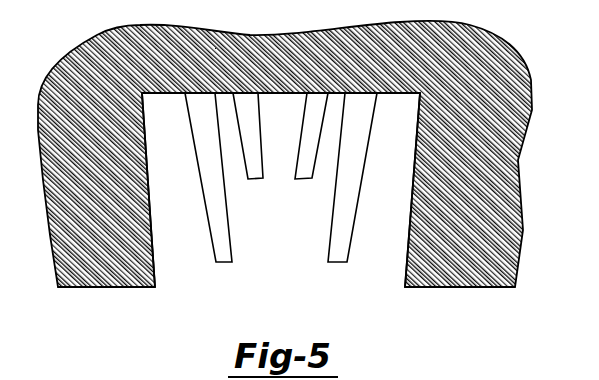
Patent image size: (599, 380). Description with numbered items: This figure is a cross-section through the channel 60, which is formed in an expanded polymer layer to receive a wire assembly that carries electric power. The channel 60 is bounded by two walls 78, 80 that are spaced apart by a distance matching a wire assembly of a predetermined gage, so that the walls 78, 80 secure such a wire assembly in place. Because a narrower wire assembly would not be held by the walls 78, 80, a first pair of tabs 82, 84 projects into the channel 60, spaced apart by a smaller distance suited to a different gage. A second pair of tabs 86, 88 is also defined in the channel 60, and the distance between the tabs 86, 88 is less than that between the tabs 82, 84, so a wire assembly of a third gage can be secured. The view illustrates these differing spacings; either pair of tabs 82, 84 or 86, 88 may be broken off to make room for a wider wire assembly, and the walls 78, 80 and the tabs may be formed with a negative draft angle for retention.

The channel 60 is at (353, 296).
The wall 78 is at (408, 238).
The wall 80 is at (150, 225).
The first pair of tabs 82 is at (330, 230).
The first pair of tabs 84 is at (230, 232).
The second pair of tabs 86 is at (303, 178).
The second pair of tabs 88 is at (262, 178).